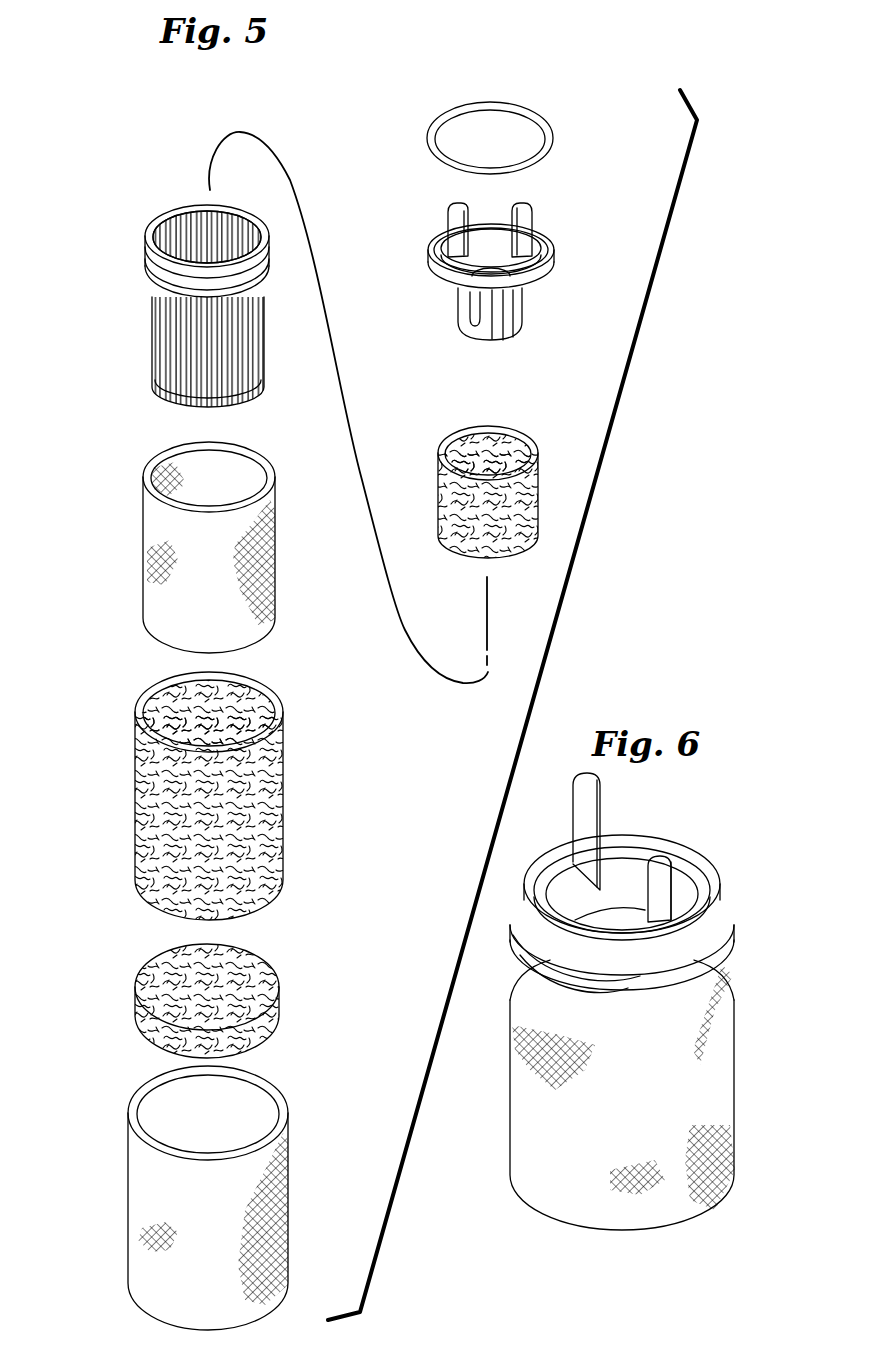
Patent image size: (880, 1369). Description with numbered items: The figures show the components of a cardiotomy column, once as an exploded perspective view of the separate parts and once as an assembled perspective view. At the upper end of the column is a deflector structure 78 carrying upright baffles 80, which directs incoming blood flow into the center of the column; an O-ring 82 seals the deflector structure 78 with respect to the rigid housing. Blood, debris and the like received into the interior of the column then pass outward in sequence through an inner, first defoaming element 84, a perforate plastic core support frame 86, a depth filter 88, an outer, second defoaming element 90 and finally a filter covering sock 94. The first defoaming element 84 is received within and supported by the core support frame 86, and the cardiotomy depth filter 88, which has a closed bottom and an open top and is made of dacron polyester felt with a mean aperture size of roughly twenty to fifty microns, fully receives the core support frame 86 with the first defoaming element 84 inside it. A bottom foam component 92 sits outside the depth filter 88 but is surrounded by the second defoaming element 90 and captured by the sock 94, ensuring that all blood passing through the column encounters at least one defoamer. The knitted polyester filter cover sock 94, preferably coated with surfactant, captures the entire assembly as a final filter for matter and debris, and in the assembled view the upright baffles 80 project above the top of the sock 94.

In FIG. 5, the deflector structure 78 is at (568, 241).
In FIG. 5, the upright baffles 80 is at (540, 212).
In FIG. 6, the upright baffles 80 is at (668, 868).
In FIG. 5, the O-ring 82 is at (549, 106).
In FIG. 5, the first defoaming element 84 is at (543, 447).
In FIG. 5, the core support frame 86 is at (145, 308).
In FIG. 5, the depth filter 88 is at (128, 530).
In FIG. 5, the second defoaming element 90 is at (130, 772).
In FIG. 5, the bottom foam component 92 is at (135, 1000).
In FIG. 5, the filter cover sock 94 is at (288, 1132).
In FIG. 6, the filter cover sock 94 is at (728, 1035).